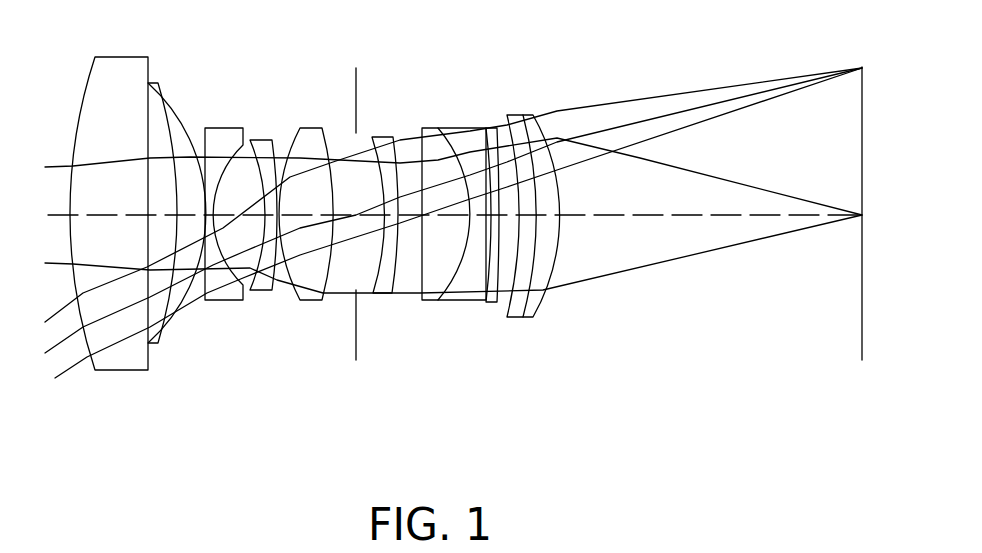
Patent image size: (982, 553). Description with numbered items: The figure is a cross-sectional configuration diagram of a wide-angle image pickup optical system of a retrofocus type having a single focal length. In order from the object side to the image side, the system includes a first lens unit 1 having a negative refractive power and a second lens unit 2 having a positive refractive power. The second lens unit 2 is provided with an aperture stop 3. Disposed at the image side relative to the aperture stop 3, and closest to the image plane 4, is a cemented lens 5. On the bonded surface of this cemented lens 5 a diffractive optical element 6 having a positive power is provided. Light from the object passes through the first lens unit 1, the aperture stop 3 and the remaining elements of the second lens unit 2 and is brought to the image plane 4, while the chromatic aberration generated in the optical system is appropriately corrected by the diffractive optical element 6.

The first lens unit 1 is at (47, 397).
The second lens unit 2 is at (428, 249).
The aperture stop 3 is at (357, 100).
The image plane 4 is at (863, 102).
The cemented lens 5 is at (577, 169).
The diffractive optical element 6 is at (560, 187).